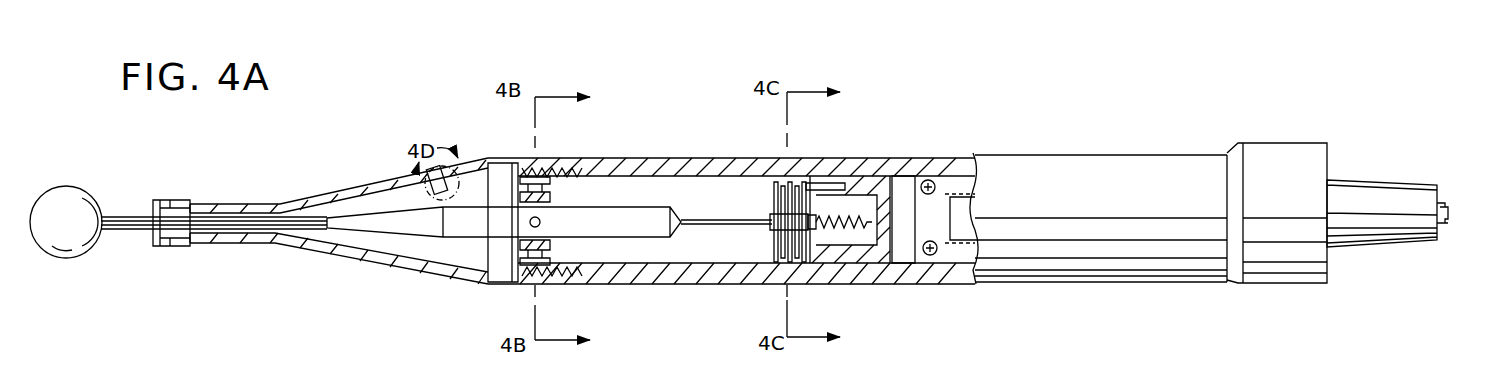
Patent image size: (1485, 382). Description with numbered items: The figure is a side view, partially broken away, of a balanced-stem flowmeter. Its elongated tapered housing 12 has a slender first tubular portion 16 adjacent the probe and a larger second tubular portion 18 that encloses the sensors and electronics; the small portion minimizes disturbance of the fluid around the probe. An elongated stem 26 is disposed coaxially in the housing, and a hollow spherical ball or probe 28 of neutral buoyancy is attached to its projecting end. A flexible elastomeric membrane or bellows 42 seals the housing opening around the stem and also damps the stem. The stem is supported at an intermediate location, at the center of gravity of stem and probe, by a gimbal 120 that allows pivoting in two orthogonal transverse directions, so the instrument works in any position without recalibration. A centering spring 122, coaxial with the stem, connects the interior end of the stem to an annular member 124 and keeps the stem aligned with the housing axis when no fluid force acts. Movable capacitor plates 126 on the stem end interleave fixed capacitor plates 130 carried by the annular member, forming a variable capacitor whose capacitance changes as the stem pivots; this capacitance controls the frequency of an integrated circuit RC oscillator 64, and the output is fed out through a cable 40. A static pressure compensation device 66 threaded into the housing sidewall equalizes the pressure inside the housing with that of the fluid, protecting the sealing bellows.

The tubular housing or sheath 12 is at (940, 283).
The first tubular portion 16 is at (218, 245).
The second tubular portion 18 is at (630, 285).
The stem 26 is at (124, 218).
The probe 28 is at (96, 206).
The cable 40 is at (1446, 226).
The elastomeric membrane or bellows 42 is at (172, 204).
The integrated circuit RC oscillator 64 is at (960, 200).
The static pressure compensation device 66 is at (452, 168).
The gimbal 120 is at (558, 190).
The centering spring 122 is at (856, 205).
The annular member 124 is at (870, 258).
The movable capacitor plates 126 is at (772, 240).
The fixed capacitor plates 130 is at (772, 189).